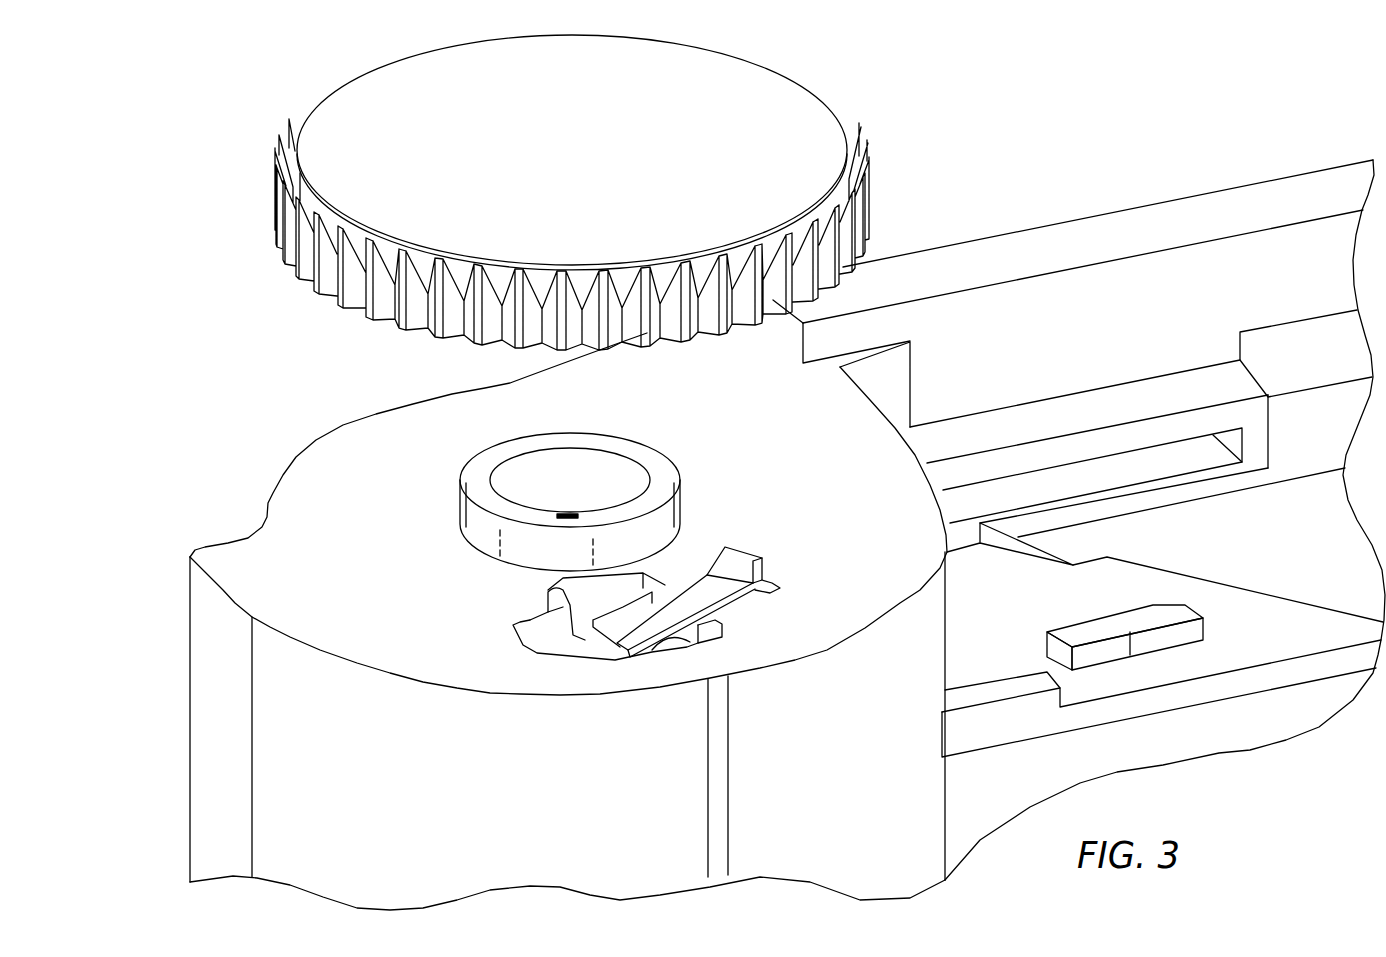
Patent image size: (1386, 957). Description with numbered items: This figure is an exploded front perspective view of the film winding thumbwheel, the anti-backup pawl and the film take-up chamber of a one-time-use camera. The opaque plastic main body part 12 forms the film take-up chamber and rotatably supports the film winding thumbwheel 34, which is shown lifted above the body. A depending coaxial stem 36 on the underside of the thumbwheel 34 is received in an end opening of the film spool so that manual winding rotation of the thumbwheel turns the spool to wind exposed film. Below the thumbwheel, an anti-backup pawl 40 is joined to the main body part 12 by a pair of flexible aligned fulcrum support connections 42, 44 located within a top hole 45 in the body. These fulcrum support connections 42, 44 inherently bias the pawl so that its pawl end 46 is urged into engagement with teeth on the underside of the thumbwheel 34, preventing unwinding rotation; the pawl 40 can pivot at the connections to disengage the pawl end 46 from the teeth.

The main body part 12 is at (185, 662).
The film winding thumbwheel 34 is at (534, 223).
The depending coaxial stem 36 is at (566, 354).
The anti-backup pawl 40 is at (651, 615).
The fulcrum support connection 42 is at (671, 652).
The fulcrum support connection 44 is at (625, 592).
The top hole 45 is at (721, 635).
The pawl end 46 is at (723, 550).